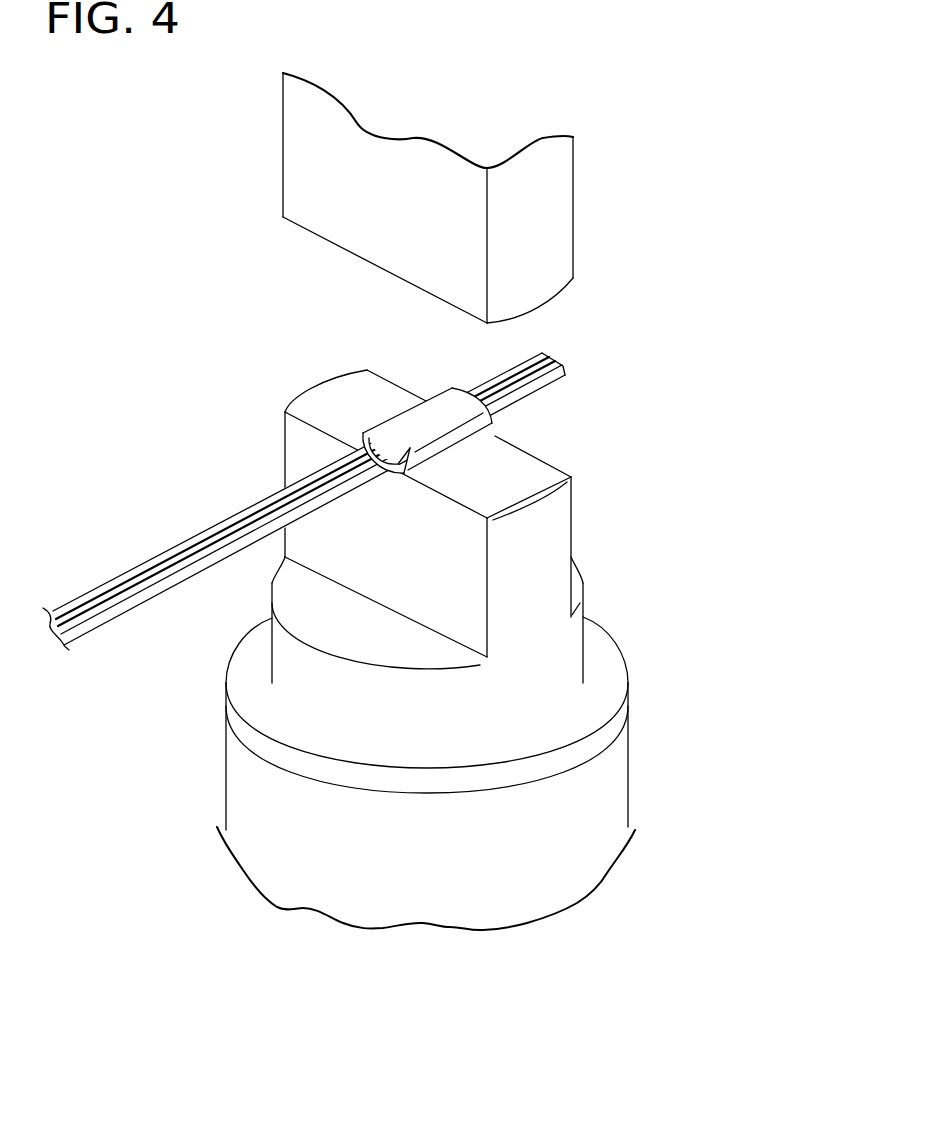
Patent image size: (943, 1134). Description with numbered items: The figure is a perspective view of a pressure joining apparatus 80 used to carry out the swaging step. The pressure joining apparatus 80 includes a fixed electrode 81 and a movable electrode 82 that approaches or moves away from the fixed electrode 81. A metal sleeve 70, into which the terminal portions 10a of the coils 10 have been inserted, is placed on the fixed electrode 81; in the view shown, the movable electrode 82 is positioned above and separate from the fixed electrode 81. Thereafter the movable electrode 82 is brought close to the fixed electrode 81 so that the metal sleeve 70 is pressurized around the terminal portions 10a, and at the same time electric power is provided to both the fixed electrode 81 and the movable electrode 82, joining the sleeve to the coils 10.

The coil 10 is at (304, 501).
The terminal portion 10a is at (182, 562).
The metal sleeve 70 is at (407, 423).
The pressure joining apparatus 80 is at (510, 501).
The fixed electrode 81 is at (565, 658).
The movable electrode 82 is at (558, 218).